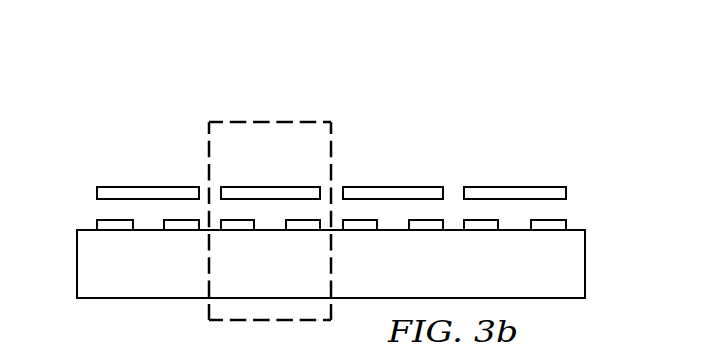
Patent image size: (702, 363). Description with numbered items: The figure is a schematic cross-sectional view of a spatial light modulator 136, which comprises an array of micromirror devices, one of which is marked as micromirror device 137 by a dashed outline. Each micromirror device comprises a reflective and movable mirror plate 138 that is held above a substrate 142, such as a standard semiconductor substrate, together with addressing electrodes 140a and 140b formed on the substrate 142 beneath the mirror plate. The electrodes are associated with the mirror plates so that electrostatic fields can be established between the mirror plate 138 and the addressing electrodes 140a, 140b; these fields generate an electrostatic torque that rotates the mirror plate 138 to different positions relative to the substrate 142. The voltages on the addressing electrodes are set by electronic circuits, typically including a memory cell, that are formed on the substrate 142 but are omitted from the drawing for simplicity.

The spatial light modulator 136 is at (146, 124).
The micromirror device 137 is at (260, 121).
The mirror plate 138 is at (270, 193).
The addressing electrode 140a is at (237, 228).
The addressing electrode 140b is at (303, 228).
The substrate 142 is at (529, 277).